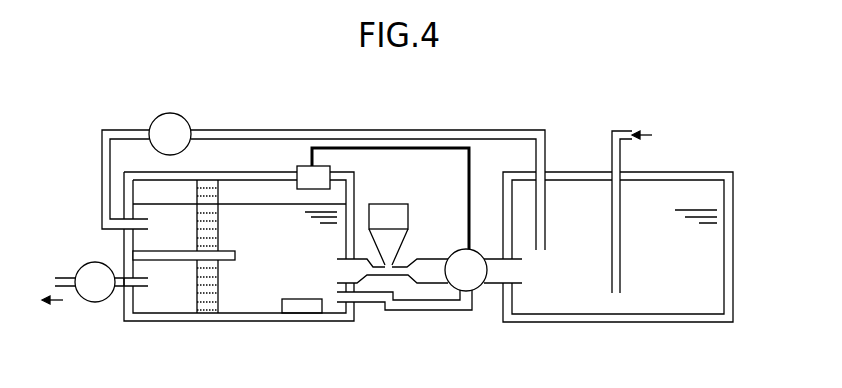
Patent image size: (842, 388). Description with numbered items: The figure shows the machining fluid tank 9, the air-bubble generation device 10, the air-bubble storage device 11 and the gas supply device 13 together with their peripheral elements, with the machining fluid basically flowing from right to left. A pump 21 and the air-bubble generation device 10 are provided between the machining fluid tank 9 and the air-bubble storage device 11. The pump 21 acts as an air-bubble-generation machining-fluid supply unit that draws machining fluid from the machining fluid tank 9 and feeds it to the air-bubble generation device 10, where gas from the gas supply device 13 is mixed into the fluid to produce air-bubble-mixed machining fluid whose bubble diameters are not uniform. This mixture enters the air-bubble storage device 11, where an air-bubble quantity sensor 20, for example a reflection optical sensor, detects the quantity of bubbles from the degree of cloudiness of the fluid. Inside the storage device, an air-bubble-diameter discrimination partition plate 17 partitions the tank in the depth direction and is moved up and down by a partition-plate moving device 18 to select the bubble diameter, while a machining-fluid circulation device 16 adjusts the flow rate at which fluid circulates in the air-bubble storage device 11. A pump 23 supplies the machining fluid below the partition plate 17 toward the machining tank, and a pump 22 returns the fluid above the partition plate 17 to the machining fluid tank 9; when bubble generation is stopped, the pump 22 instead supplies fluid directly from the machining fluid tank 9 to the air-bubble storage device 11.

The machining fluid tank 9 is at (600, 320).
The air-bubble generation device 10 is at (425, 258).
The air-bubble storage device 11 is at (250, 316).
The gas supply device 13 is at (398, 202).
The machining-fluid circulation device 16 is at (297, 298).
The air-bubble-diameter discrimination partition plate 17 is at (231, 251).
The partition-plate moving device 18 is at (219, 292).
The air-bubble quantity sensor 20 is at (304, 165).
The pump 21 is at (473, 249).
The pump 22 is at (183, 114).
The pump 23 is at (88, 261).